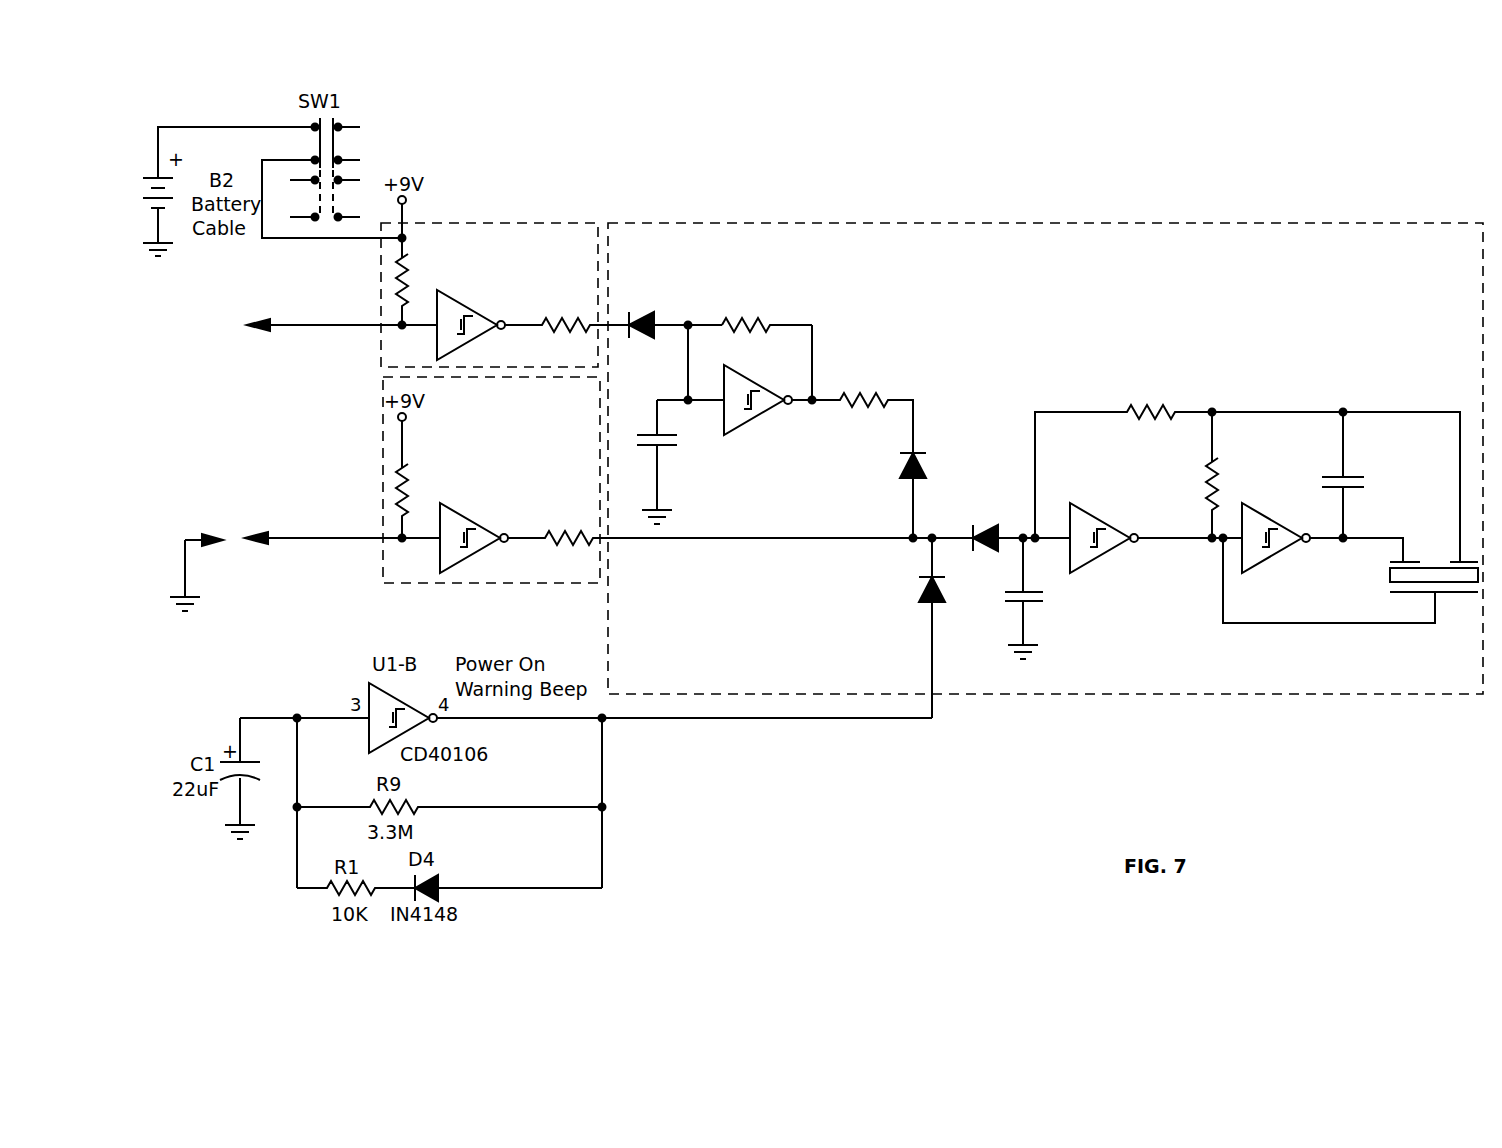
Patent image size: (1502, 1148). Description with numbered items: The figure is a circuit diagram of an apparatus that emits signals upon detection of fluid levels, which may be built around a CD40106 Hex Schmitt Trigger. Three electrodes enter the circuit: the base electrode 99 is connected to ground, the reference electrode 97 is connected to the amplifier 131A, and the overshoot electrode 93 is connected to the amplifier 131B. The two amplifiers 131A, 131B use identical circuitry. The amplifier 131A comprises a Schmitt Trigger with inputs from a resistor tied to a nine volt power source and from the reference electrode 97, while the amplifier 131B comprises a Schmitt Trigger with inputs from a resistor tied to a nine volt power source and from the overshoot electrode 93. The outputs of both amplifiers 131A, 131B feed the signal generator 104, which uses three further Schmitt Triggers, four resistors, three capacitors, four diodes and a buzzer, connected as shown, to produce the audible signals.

The overshoot electrode 93 is at (255, 333).
The reference electrode 97 is at (297, 544).
The base electrode 99 is at (207, 539).
The signal generator 104 is at (988, 217).
The amplifier 131A is at (513, 585).
The amplifier 131B is at (523, 220).